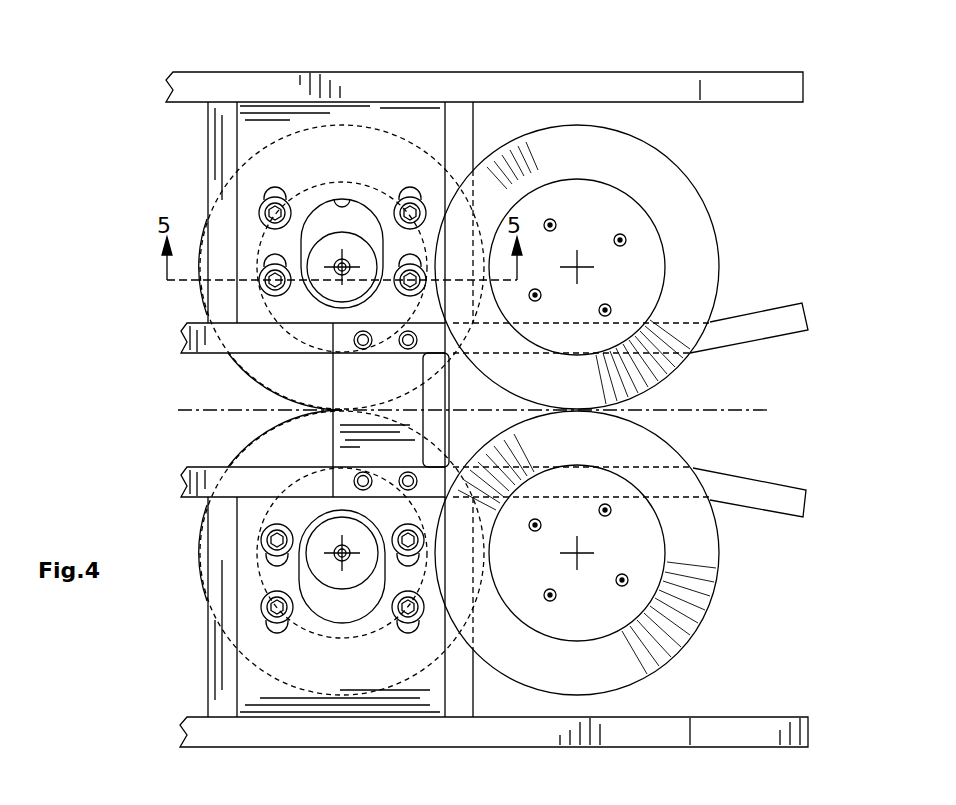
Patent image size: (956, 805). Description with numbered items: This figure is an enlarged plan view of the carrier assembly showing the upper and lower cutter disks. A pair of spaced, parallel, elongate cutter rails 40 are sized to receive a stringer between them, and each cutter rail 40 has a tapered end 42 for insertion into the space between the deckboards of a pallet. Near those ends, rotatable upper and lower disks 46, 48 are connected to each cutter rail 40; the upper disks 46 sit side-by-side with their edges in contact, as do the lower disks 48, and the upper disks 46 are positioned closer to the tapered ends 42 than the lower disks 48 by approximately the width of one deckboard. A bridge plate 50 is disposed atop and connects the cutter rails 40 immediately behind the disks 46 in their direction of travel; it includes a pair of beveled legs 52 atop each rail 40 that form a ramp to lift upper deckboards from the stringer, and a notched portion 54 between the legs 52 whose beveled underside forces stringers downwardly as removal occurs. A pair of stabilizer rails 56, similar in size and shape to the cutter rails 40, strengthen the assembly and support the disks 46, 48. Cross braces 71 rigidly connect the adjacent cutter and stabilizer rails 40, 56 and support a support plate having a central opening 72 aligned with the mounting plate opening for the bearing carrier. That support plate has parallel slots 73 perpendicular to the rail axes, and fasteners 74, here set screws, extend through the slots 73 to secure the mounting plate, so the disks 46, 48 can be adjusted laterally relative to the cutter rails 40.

The cutter rail 40 is at (200, 345).
The tapered end 42 is at (778, 330).
The upper disk 46 is at (672, 193).
The lower disk 48 is at (262, 367).
The bridge plate 50 is at (370, 382).
The beveled leg 52 is at (435, 342).
The notched portion 54 is at (425, 397).
The stabilizer rail 56 is at (498, 86).
The cross brace 71 is at (458, 128).
The central opening 72 is at (344, 197).
The slot 73 is at (405, 632).
The fastener 74 is at (265, 537).